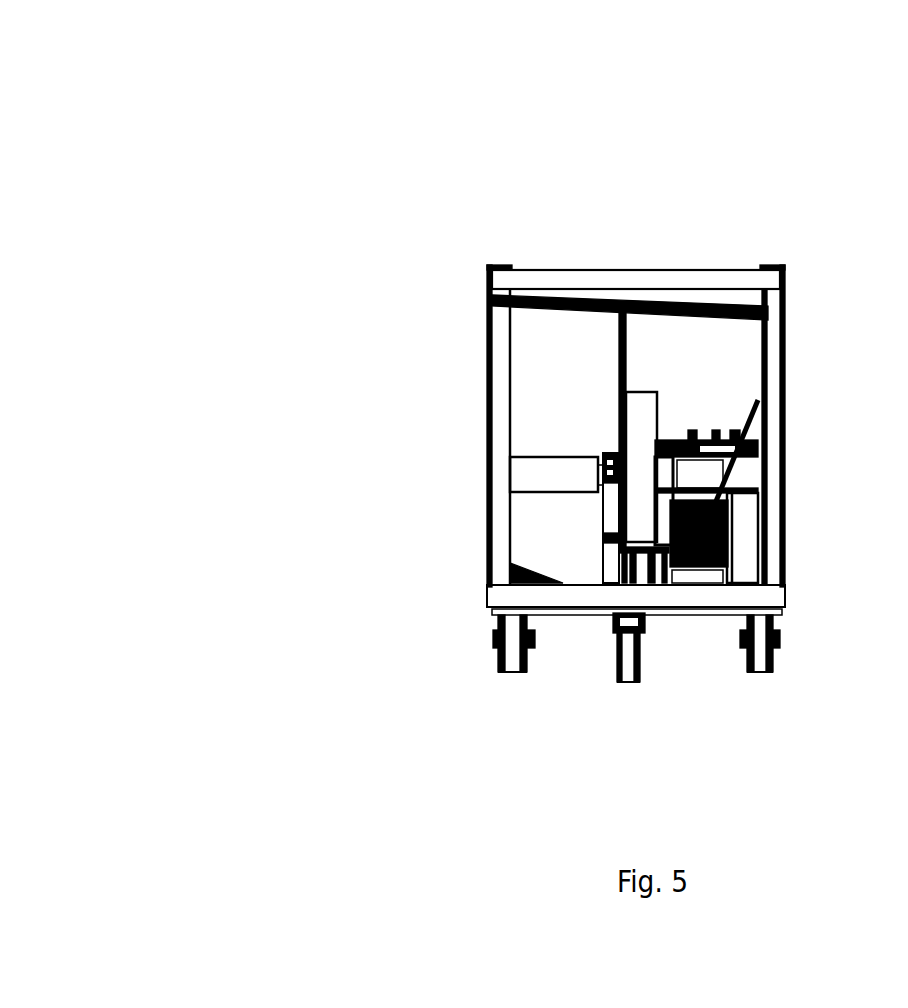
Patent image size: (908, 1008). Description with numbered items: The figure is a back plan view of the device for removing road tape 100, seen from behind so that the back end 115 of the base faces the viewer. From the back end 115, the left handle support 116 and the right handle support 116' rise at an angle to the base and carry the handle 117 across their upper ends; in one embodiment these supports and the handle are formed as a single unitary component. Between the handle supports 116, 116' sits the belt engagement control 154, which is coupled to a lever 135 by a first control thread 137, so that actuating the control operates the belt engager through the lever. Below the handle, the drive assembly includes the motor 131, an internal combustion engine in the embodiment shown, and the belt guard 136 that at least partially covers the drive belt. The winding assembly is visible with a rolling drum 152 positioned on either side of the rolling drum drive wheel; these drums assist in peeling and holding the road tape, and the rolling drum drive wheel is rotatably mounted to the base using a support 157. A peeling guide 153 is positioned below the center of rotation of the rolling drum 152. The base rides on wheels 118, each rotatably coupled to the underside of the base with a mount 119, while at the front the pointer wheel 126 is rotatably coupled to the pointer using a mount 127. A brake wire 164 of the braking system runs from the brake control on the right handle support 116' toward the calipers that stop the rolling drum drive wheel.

The device for removing road tape 100 is at (172, 102).
The handle 117 is at (662, 272).
The belt engagement control 154 is at (583, 300).
The first control thread 137 is at (618, 342).
The left handle support 116 is at (440, 426).
The right handle support 116' is at (821, 426).
The support 157 is at (612, 455).
The belt guard 136 is at (655, 405).
The motor 131 is at (700, 445).
The brake wire 164 is at (757, 420).
The rolling drum 152 is at (537, 477).
The lever 135 is at (603, 550).
The mount 119 is at (493, 637).
The wheel 118 is at (518, 675).
The peeling guide 153 is at (583, 618).
The mount 127 is at (617, 648).
The pointer wheel 126 is at (625, 683).
The back end 115 is at (675, 612).